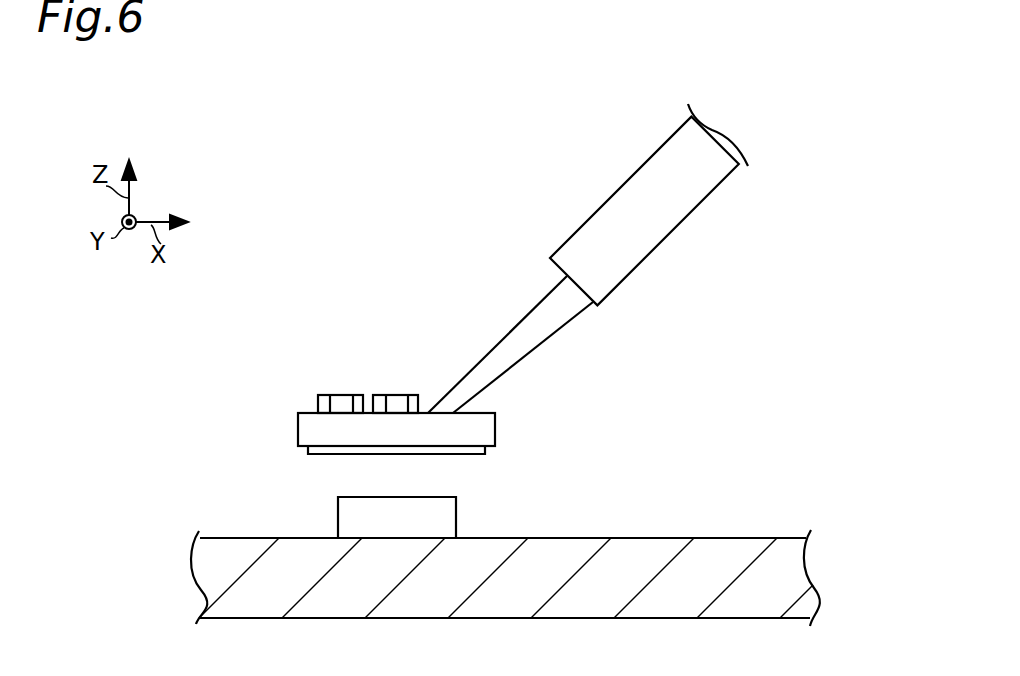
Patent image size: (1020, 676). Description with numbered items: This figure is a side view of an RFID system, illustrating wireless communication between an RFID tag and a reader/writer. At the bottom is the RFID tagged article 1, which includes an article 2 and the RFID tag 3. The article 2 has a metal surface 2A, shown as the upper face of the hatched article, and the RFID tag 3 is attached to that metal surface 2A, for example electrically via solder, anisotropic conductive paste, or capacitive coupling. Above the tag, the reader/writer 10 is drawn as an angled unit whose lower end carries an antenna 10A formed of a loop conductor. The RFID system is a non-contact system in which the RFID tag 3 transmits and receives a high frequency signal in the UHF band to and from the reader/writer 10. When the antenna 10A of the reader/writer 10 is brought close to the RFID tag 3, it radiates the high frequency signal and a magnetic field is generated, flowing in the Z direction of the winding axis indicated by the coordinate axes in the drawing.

The RFID tagged article 1 is at (105, 465).
The article 2 is at (213, 570).
The metal surface 2A is at (710, 537).
The RFID tag 3 is at (352, 517).
The reader/writer 10 is at (568, 162).
The antenna 10A is at (470, 452).